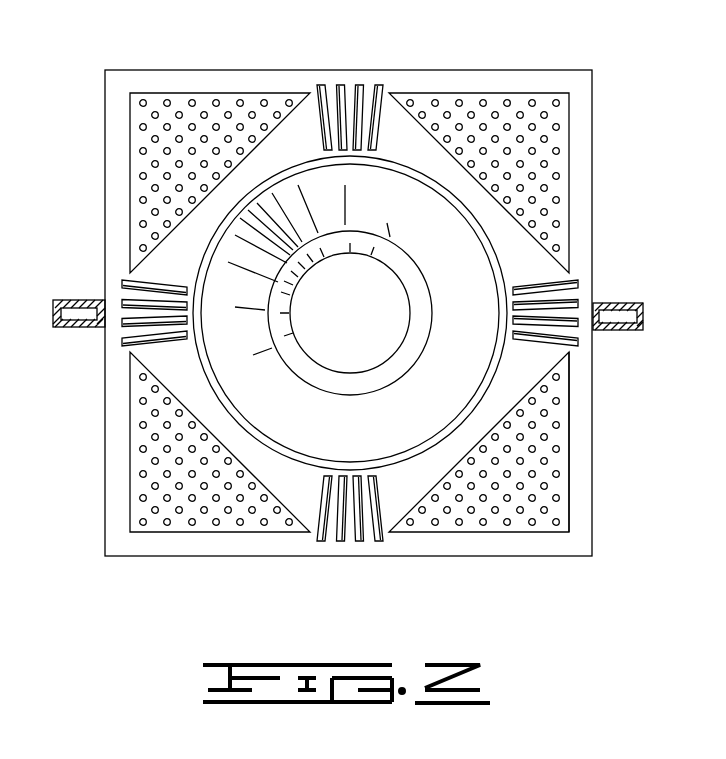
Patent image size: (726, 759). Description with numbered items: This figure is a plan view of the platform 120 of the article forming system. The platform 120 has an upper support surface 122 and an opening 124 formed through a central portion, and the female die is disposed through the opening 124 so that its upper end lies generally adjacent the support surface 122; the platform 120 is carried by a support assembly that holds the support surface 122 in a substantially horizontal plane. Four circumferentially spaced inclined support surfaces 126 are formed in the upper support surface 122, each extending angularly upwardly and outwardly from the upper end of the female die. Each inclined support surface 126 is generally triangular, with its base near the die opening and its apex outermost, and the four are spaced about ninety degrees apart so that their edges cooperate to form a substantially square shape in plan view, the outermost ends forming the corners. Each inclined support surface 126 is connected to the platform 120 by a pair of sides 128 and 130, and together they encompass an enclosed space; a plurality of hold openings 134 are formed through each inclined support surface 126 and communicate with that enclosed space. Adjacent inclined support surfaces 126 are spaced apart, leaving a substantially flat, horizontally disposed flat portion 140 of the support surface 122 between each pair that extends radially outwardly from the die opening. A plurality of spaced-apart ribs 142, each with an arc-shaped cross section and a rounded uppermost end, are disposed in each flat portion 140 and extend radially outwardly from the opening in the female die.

The platform 120 is at (358, 306).
The upper support surface 122 is at (542, 144).
The opening 124 is at (392, 452).
The inclined support surface 126 is at (363, 307).
The side 128 is at (570, 410).
The side 130 is at (541, 530).
The hold opening 134 is at (153, 162).
The flat portion 140 is at (358, 305).
The rib 142 is at (281, 86).